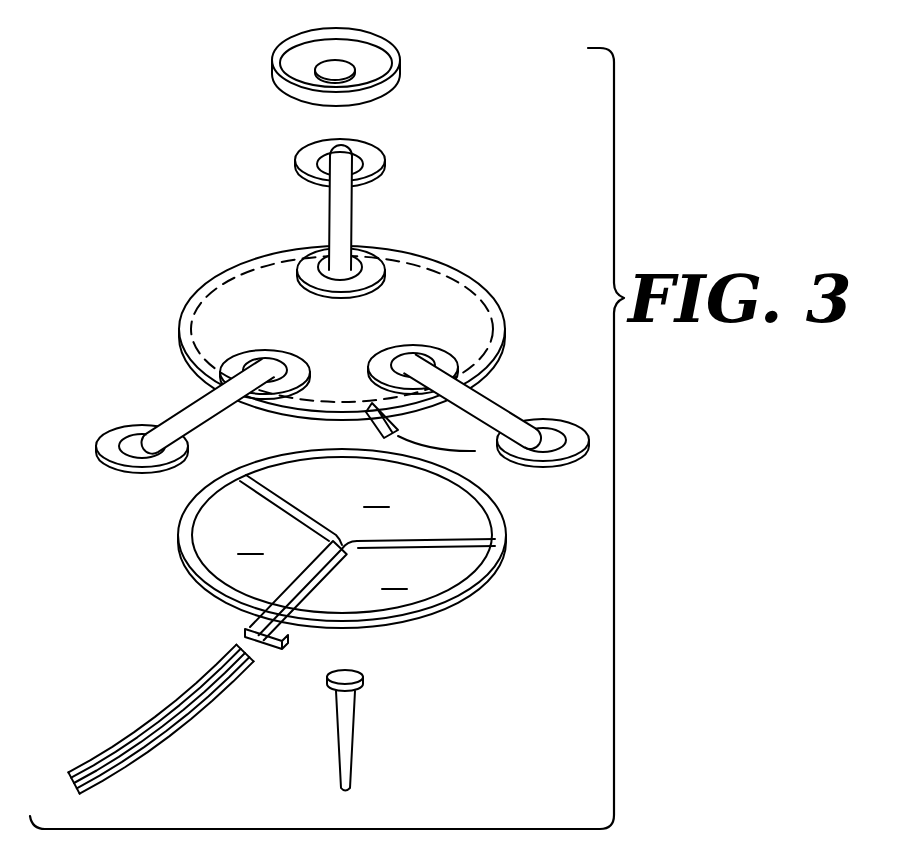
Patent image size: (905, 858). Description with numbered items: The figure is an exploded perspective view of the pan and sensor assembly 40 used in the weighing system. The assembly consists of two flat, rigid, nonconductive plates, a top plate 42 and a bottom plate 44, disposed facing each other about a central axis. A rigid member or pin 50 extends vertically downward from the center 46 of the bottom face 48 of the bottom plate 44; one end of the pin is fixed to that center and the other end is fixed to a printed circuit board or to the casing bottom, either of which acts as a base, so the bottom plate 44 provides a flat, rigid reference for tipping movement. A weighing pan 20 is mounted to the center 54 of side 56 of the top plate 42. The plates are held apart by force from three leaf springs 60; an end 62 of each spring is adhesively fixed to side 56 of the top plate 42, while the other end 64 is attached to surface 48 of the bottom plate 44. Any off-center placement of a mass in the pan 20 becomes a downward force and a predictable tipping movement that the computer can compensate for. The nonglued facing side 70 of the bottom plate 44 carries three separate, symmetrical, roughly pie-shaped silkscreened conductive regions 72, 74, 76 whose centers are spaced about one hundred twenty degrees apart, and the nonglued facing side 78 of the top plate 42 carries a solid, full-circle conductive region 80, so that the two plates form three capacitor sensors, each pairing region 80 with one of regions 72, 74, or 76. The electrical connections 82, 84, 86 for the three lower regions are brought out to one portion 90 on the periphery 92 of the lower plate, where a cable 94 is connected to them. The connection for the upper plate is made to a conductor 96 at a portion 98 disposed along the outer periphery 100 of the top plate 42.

The weighing pan 20 is at (400, 40).
The pan and sensor assembly 40 is at (482, 178).
The top plate 42 is at (325, 325).
The bottom plate 44 is at (155, 541).
The center of bottom face 46 is at (330, 667).
The bottom face 48 is at (453, 618).
The rigid member or pin 50 is at (350, 725).
The center of side of top plate 54 is at (338, 321).
The side of top plate 56 is at (410, 265).
The leaf springs 60 is at (352, 213).
The end of leaf spring 62 is at (385, 287).
The other end of leaf spring 64 is at (370, 152).
The nonglued facing side of bottom plate 70 is at (500, 520).
The conductive region 72 is at (376, 496).
The conductive region 74 is at (394, 578).
The conductive region 76 is at (250, 543).
The nonglued facing side of top plate 78 is at (270, 428).
The conductive region 80 is at (462, 278).
The electrical connection 82 is at (245, 638).
The electrical connection 84 is at (283, 650).
The electrical connection 86 is at (250, 624).
The portion of lower plate periphery 90 is at (248, 632).
The periphery of lower capacitor plate 92 is at (410, 628).
The cable 94 is at (180, 735).
The conductor 96 is at (440, 447).
The portion of top plate periphery 98 is at (370, 425).
The outer periphery of top plate 100 is at (503, 310).